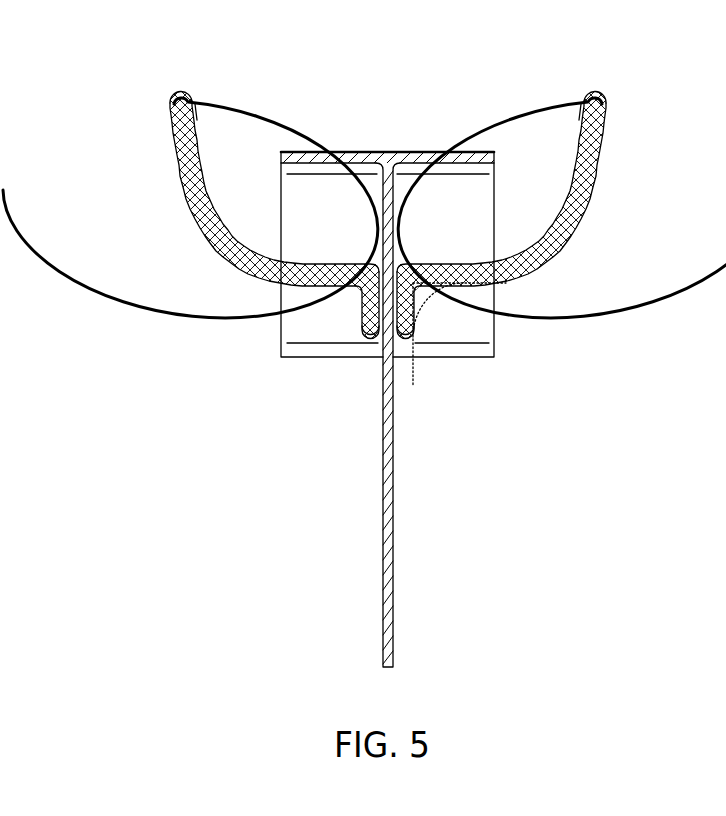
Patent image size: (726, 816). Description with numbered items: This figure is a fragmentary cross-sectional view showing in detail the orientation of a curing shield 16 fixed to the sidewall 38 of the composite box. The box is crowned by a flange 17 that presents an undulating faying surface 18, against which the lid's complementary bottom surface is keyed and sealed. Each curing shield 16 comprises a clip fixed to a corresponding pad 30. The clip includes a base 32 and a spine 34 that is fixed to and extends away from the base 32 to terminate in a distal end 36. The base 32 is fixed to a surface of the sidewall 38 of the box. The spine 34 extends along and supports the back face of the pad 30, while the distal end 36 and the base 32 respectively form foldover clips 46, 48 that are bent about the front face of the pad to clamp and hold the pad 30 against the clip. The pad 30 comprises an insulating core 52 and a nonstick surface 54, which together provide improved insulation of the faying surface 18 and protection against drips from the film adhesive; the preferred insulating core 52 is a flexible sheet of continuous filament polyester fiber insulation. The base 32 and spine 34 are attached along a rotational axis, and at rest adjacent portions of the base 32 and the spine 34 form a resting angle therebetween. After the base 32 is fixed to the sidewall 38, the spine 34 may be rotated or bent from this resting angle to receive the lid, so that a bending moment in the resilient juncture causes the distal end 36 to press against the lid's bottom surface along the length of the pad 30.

The curing shield 16 is at (170, 174).
The flange 17 is at (281, 155).
The faying surface 18 is at (434, 150).
The pad 30 is at (226, 216).
The base 32 is at (361, 313).
The spine 34 is at (205, 237).
The distal end 36 is at (169, 107).
The sidewall 38 is at (382, 529).
The foldover clip 46 is at (188, 100).
The foldover clip 48 is at (370, 341).
The insulating core 52 is at (194, 188).
The nonstick surface 54 is at (194, 151).